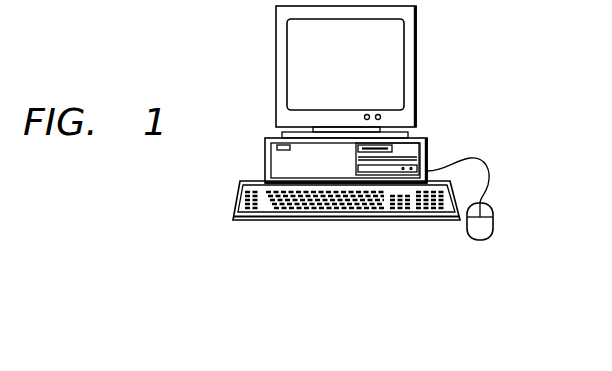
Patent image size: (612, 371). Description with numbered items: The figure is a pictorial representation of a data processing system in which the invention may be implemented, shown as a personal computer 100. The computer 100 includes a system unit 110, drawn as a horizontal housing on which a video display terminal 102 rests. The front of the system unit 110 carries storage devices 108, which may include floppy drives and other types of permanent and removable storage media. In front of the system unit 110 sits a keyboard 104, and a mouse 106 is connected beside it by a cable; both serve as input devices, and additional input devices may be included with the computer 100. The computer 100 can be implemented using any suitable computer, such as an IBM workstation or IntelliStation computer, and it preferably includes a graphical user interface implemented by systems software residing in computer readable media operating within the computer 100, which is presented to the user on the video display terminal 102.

The computer 100 is at (210, 61).
The video display terminal 102 is at (417, 66).
The keyboard 104 is at (259, 222).
The mouse 106 is at (480, 241).
The storage devices 108 is at (405, 148).
The system unit 110 is at (266, 147).